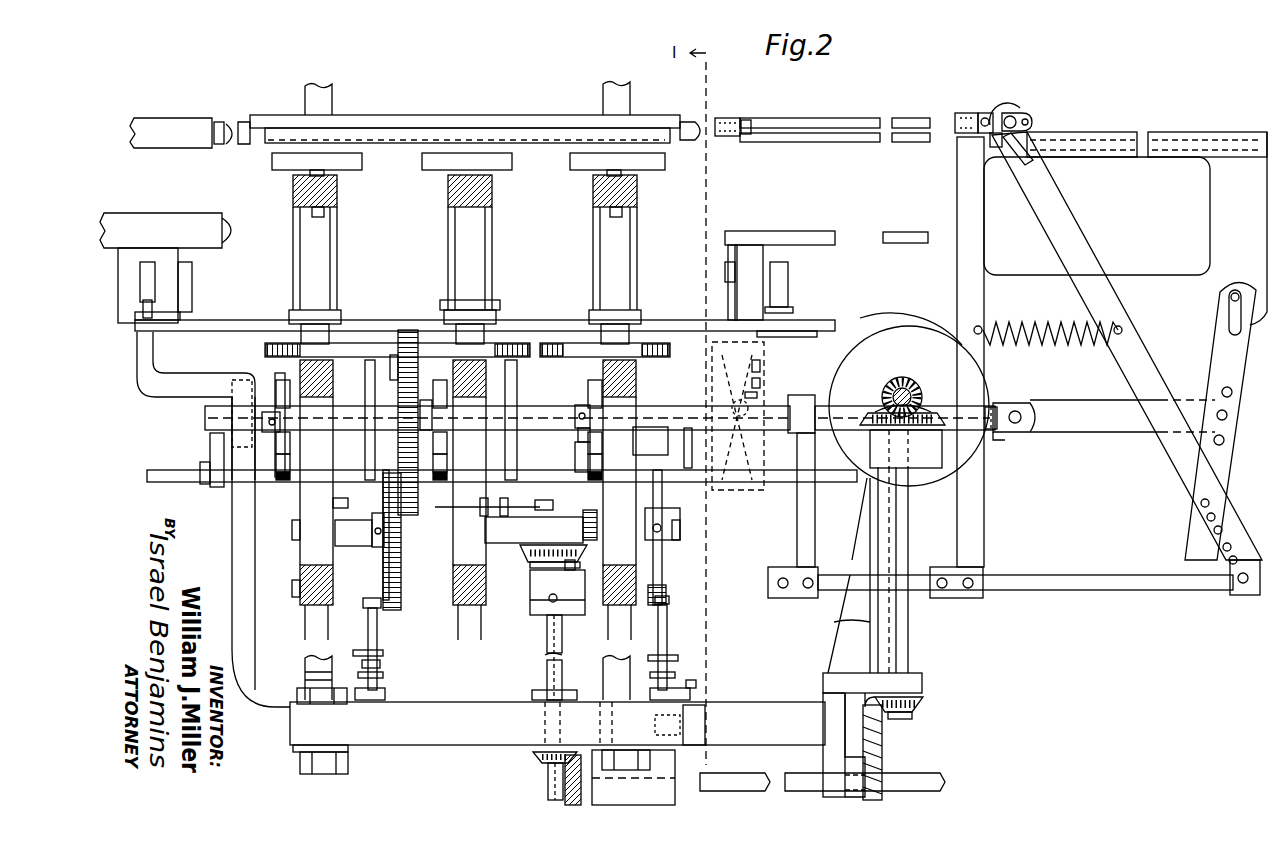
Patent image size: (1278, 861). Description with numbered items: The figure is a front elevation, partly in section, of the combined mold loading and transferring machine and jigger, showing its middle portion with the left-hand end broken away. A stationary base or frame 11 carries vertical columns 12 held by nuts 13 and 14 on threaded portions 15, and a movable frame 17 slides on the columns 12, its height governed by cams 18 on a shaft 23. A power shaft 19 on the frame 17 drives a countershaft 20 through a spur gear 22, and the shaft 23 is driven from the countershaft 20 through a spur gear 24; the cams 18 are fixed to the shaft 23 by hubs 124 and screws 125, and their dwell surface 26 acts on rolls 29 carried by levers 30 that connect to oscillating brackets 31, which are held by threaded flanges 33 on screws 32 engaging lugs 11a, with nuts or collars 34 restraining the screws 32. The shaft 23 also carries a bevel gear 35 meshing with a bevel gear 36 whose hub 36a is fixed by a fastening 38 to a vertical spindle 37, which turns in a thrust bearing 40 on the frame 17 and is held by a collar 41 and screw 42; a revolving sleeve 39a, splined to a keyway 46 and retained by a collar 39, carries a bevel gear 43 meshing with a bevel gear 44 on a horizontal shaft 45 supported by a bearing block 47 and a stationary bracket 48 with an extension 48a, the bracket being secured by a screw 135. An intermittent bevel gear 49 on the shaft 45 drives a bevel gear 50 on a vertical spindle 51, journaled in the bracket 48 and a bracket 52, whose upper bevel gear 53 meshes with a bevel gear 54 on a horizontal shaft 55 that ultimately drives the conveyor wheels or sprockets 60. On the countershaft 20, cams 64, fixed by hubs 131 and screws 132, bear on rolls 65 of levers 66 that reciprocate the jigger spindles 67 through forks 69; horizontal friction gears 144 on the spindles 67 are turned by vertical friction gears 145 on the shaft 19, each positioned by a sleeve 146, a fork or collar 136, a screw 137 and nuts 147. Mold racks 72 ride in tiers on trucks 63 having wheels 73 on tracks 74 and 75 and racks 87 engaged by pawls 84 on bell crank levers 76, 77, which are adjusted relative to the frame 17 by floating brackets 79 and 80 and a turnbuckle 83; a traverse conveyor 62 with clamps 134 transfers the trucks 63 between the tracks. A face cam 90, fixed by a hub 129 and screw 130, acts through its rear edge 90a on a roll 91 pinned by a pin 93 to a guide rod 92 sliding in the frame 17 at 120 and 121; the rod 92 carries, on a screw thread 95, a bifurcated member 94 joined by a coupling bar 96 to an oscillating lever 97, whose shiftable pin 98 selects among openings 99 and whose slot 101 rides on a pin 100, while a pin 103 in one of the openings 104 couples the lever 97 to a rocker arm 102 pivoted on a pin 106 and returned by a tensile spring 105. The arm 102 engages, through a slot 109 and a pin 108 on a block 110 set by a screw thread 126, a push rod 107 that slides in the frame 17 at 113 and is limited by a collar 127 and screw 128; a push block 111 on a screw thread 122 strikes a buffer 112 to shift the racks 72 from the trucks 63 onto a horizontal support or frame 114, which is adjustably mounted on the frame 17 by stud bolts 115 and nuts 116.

The stationary base or frame 11 is at (557, 723).
The lugs 11a is at (385, 692).
The vertical columns 12 is at (332, 98).
The nuts 13 is at (297, 697).
The nuts 14 is at (300, 762).
The threaded portions 15 is at (305, 679).
The movable frame 17 is at (300, 575).
The cams 18 is at (383, 568).
The power shaft 19 is at (350, 406).
The countershaft 20 is at (650, 441).
The spur gear 22 is at (408, 330).
The shaft 23 is at (534, 530).
The spur gear 24 is at (396, 380).
The dwell surface 26 is at (401, 566).
The rolls 29 is at (380, 615).
The levers 30 is at (368, 614).
The oscillating brackets 31 is at (383, 653).
The screws 32 is at (383, 677).
The threaded flanges 33 is at (380, 665).
The nuts or collars 34 is at (696, 684).
The bevel gear 35 is at (588, 510).
The bevel gear 36 is at (522, 552).
The hub 36a is at (530, 570).
The vertical spindle 37 is at (562, 658).
The fastening 38 is at (575, 566).
The collar 39 is at (535, 700).
The revolving sleeve 39a is at (540, 726).
The thrust bearing 40 is at (557, 592).
The collar 41 is at (548, 600).
The screw 42 is at (547, 620).
The bevel gear 43 is at (533, 757).
The bevel gear 44 is at (548, 797).
The horizontal shaft 45 is at (548, 782).
The keyway 46 is at (545, 676).
The bearing block 47 is at (633, 777).
The stationary bracket 48 is at (849, 575).
The extension 48a is at (846, 735).
The intermittent bevel gear 49 is at (882, 754).
The bevel gear 50 is at (925, 707).
The vertical spindle 51 is at (908, 652).
The bracket 52 is at (906, 449).
The bevel gear 53 is at (925, 413).
The bevel gear 54 is at (922, 406).
The horizontal shaft 55 is at (925, 378).
The wheels or sprockets 60 is at (909, 406).
The traverse conveyor 62 is at (147, 472).
The carriers or trucks 63 is at (800, 231).
The cams 64 is at (290, 448).
The rolls 65 is at (290, 463).
The levers 66 is at (290, 478).
The jigger spindles 67 is at (337, 284).
The forks 69 is at (500, 308).
The mold racks 72 is at (232, 118).
The wheels 73 is at (156, 292).
The track 74 is at (793, 311).
The track 75 is at (180, 317).
The bell crank lever arm 76 is at (183, 308).
The horizontal arm 77 is at (200, 470).
The floating link or bracket 79 is at (275, 382).
The floating link or bracket 80 is at (210, 442).
The turnbuckle 83 is at (238, 380).
The pawl 84 is at (192, 277).
The racks 87 is at (178, 265).
The face cam 90 is at (762, 490).
The rear edge 90a is at (735, 417).
The roll 91 is at (760, 384).
The guide rod 92 is at (757, 397).
The pin 93 is at (748, 416).
The bifurcated or coupling member 94 is at (1036, 419).
The screw thread 95 is at (995, 434).
The coupling bar 96 is at (1122, 416).
The oscillating lever 97 is at (1220, 421).
The shiftable pin 98 is at (1216, 418).
The multiple openings 99 is at (1233, 394).
The pin 100 is at (1229, 300).
The slot 101 is at (1229, 317).
The rocker arm 102 is at (1188, 492).
The pin 103 is at (1201, 520).
The multiple openings 104 is at (1225, 530).
The tensile spring 105 is at (1050, 346).
The pin 106 is at (1245, 560).
The push rod 107 is at (893, 109).
The pin 108 is at (1018, 118).
The slot 109 is at (1040, 161).
The block 110 is at (1035, 123).
The push block 111 is at (738, 118).
The buffer 112 is at (228, 147).
The slidable connection 113 is at (962, 130).
The horizontal support or frame 114 is at (418, 115).
The stud bolts 115 is at (322, 176).
The nuts 116 is at (324, 214).
The slidable connection 120 is at (800, 395).
The slidable connection 121 is at (988, 406).
The screw thread 122 is at (748, 136).
The hubs 124 is at (372, 547).
The screws 125 is at (372, 533).
The screw thread 126 is at (1005, 106).
The collar 127 is at (978, 115).
The screw 128 is at (1000, 150).
The hub 129 is at (760, 368).
The screw 130 is at (712, 378).
The hubs 131 is at (232, 482).
The screws 132 is at (262, 418).
The clamps 134 is at (800, 336).
The screw 135 is at (705, 724).
The fork or collar 136 is at (575, 455).
The screw 137 is at (333, 503).
The horizontally disposed friction gears 144 is at (555, 355).
The vertically disposed friction gears 145 is at (365, 462).
The sleeve 146 is at (690, 440).
The nuts 147 is at (460, 507).